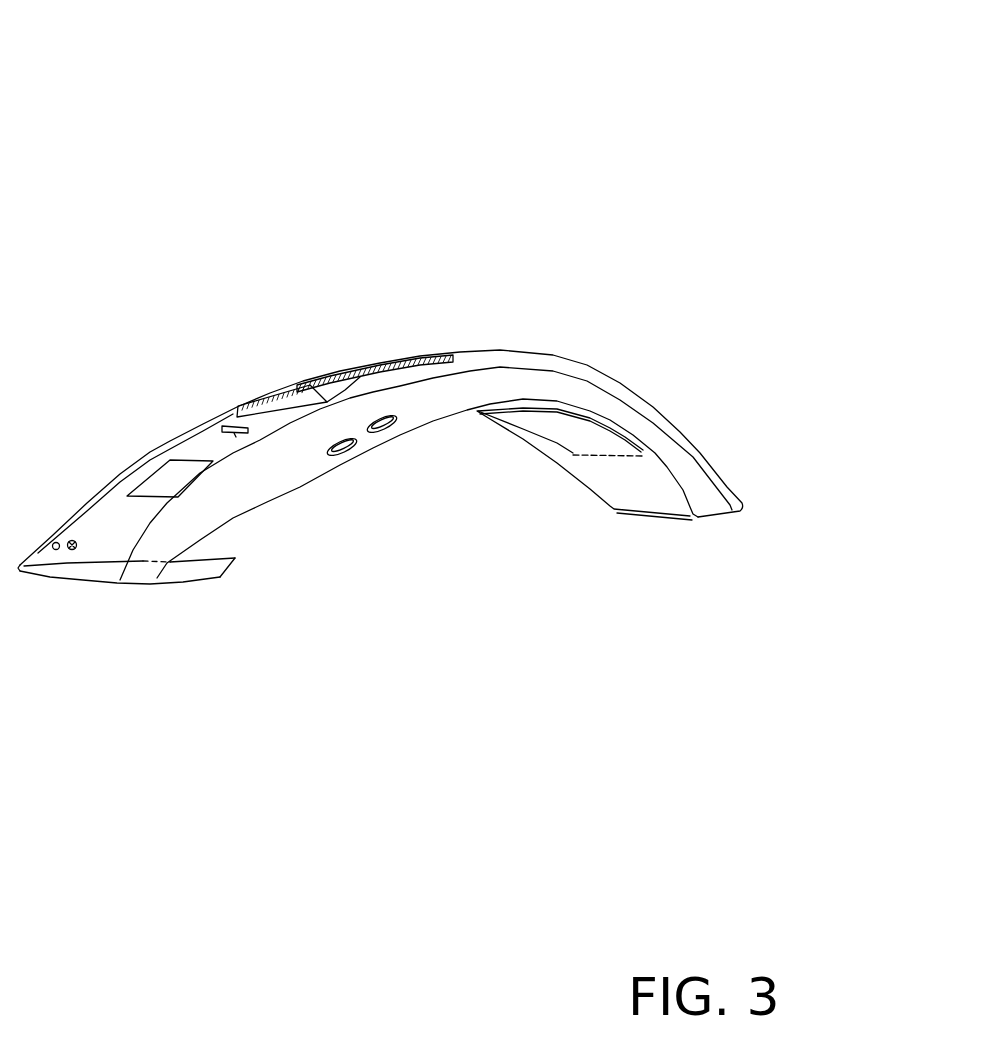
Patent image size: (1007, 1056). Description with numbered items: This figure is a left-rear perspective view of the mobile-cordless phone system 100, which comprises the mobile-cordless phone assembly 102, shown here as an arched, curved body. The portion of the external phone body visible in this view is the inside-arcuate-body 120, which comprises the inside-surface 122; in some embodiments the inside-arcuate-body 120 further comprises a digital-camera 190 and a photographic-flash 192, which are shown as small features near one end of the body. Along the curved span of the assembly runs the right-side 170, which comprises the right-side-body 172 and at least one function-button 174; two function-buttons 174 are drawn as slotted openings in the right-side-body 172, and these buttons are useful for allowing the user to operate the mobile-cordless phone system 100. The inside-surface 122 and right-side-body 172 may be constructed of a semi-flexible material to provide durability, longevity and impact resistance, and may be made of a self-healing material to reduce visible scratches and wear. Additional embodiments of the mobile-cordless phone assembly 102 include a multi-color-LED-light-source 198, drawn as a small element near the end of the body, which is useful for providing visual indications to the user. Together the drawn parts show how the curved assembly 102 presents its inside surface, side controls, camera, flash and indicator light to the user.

The mobile-cordless phone system 100 is at (521, 85).
The mobile-cordless phone assembly 102 is at (558, 112).
The inside-arcuate-body 120 is at (604, 473).
The inside-surface 122 is at (645, 494).
The right-side 170 is at (275, 500).
The right-side-body 172 is at (490, 397).
The function-button 174 is at (352, 448).
The digital-camera 190 is at (71, 549).
The photographic-flash 192 is at (58, 543).
The multi-color-LED-light-source 198 is at (234, 425).